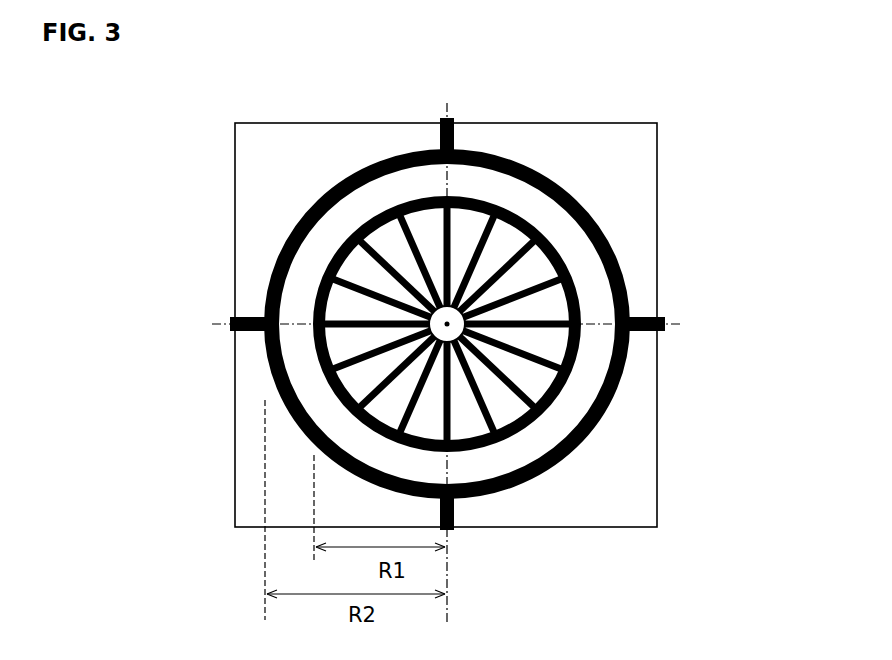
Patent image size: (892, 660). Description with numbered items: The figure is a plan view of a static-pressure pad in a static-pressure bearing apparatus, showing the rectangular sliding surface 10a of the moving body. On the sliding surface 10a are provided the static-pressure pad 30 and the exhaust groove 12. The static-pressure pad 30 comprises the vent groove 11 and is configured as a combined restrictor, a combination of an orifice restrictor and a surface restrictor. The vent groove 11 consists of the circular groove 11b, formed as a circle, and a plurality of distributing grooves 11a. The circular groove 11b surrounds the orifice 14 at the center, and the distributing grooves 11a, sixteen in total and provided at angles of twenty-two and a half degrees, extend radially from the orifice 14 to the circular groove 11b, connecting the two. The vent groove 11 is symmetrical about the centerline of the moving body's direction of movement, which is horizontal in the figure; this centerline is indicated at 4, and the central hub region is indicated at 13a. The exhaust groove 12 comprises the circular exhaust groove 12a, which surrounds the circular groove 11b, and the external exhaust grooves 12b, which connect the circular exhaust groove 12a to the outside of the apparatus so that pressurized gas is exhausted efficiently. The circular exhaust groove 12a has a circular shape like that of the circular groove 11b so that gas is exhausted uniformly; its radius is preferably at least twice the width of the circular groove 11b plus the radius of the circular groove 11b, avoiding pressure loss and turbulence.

The rotation axis 4 is at (340, 304).
The sliding surface 10a is at (577, 137).
The vent groove 11 is at (371, 218).
The distributing grooves 11a is at (545, 358).
The circular groove 11b is at (628, 296).
The exhaust groove 12 is at (297, 216).
The circular exhaust groove 12a is at (544, 231).
The external exhaust grooves 12b is at (439, 134).
The hub boss 13a is at (456, 350).
The orifice 14 is at (454, 318).
The static-pressure pad 30 is at (594, 212).